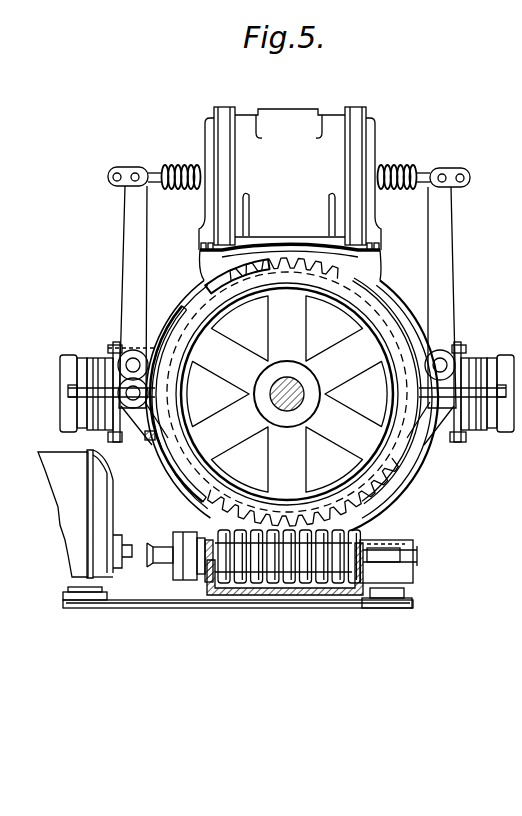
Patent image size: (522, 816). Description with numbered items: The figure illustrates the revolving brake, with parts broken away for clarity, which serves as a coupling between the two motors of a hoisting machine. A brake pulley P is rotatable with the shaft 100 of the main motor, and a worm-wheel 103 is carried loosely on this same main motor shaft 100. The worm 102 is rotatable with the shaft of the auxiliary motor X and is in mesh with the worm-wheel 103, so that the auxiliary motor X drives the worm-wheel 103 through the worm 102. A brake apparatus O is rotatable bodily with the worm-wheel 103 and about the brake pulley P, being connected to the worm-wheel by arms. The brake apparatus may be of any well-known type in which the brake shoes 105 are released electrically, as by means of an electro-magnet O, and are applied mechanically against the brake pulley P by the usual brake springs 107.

The shaft 100 is at (312, 383).
The worm 102 is at (378, 531).
The worm-wheel 103 is at (366, 516).
The brake shoes 105 is at (153, 423).
The brake springs 107 is at (93, 352).
The brake pulley P is at (201, 482).
The auxiliary motor X is at (100, 513).
The brake apparatus O is at (328, 133).